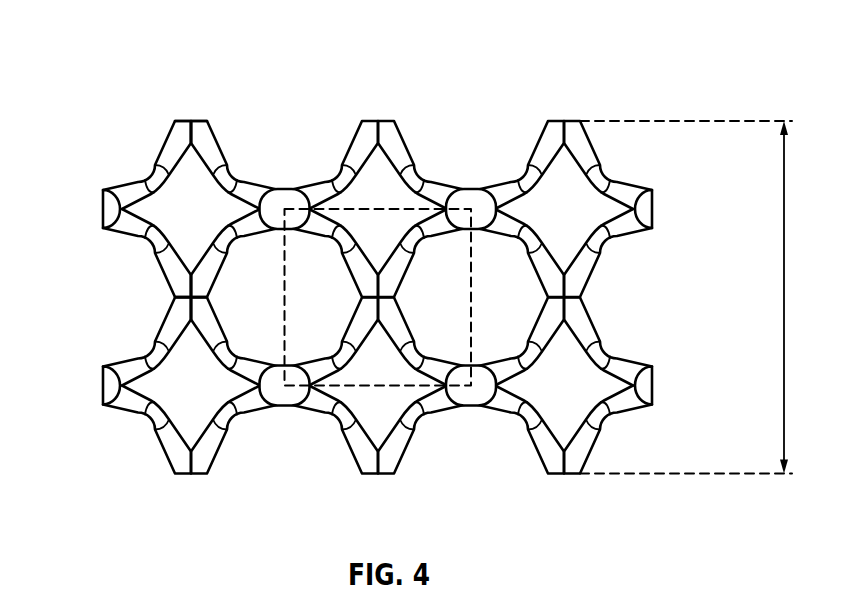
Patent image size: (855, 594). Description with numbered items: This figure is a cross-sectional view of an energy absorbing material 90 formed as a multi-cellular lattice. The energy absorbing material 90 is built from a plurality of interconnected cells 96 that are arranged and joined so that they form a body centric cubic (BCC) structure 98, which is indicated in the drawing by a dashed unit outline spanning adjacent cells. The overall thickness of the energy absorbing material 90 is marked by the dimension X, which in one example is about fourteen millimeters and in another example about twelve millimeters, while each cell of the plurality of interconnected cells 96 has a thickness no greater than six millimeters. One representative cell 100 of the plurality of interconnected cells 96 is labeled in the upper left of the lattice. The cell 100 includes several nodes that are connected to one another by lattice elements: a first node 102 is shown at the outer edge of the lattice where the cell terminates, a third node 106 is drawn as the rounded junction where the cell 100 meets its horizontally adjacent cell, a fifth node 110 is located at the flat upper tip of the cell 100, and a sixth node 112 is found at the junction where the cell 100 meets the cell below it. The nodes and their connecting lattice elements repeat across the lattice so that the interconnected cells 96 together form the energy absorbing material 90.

The energy absorbing material 90 is at (337, 240).
The plurality of interconnected cells 96 is at (164, 370).
The body centric cubic (BCC) structure 98 is at (471, 340).
The cell 100 is at (150, 174).
The first node 102 is at (104, 210).
The third node 106 is at (291, 190).
The fifth node 110 is at (197, 120).
The sixth node 112 is at (180, 298).
The overall thickness X is at (784, 297).